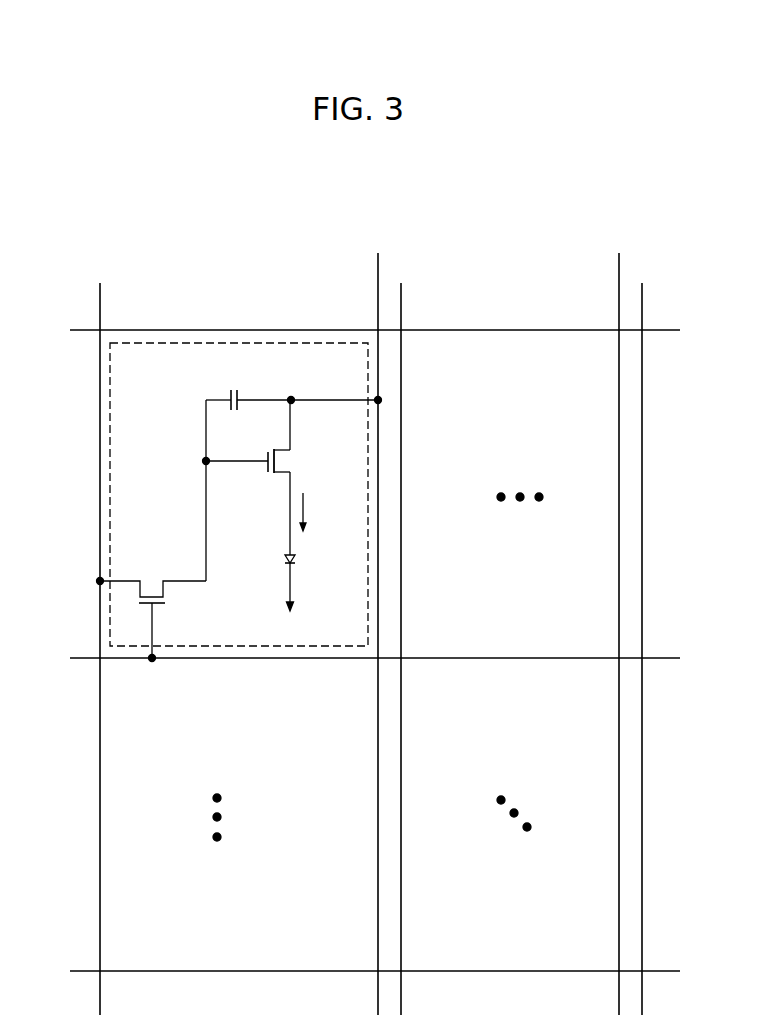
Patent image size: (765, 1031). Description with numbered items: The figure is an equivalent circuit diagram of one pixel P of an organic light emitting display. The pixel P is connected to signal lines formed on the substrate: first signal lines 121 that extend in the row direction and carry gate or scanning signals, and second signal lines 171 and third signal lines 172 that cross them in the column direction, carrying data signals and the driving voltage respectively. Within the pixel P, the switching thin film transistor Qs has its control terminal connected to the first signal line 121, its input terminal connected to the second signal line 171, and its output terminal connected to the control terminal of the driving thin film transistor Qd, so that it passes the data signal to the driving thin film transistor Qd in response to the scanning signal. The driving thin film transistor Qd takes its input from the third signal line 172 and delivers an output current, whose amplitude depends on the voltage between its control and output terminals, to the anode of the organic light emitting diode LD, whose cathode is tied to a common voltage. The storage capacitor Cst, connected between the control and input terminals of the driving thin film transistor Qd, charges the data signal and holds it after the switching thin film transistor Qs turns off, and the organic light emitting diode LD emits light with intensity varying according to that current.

The first signal line 121 is at (355, 650).
The second signal line 171 is at (379, 636).
The third signal line 172 is at (486, 620).
The pixel P is at (174, 343).
The storage capacitor Cst is at (292, 472).
The driving thin film transistor Qd is at (268, 477).
The switching thin film transistor Qs is at (152, 606).
The organic light emitting diode LD is at (308, 583).